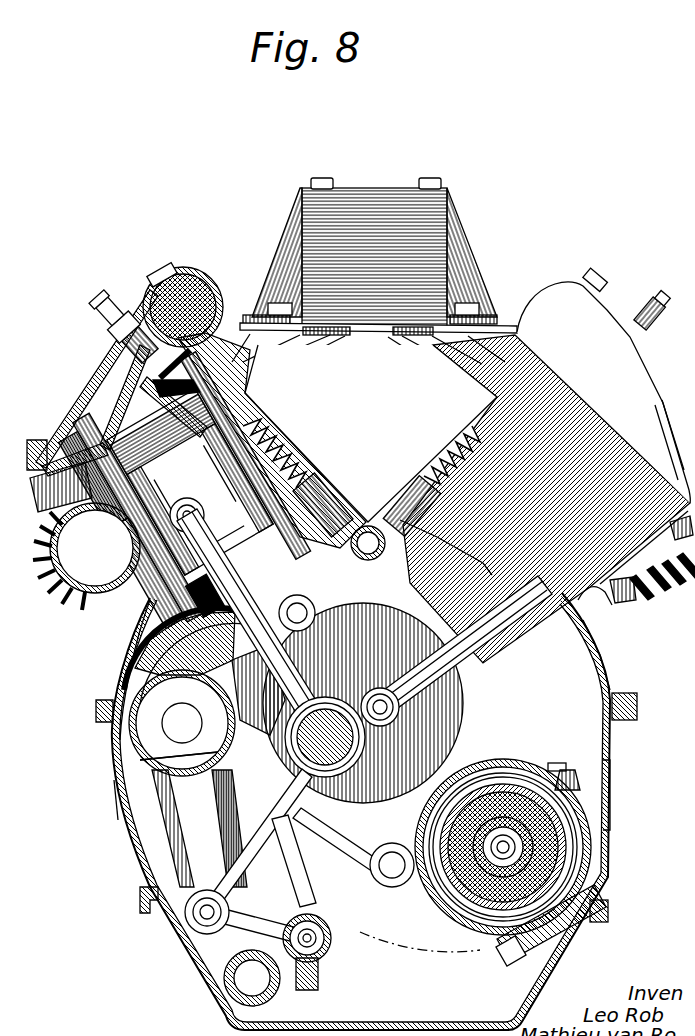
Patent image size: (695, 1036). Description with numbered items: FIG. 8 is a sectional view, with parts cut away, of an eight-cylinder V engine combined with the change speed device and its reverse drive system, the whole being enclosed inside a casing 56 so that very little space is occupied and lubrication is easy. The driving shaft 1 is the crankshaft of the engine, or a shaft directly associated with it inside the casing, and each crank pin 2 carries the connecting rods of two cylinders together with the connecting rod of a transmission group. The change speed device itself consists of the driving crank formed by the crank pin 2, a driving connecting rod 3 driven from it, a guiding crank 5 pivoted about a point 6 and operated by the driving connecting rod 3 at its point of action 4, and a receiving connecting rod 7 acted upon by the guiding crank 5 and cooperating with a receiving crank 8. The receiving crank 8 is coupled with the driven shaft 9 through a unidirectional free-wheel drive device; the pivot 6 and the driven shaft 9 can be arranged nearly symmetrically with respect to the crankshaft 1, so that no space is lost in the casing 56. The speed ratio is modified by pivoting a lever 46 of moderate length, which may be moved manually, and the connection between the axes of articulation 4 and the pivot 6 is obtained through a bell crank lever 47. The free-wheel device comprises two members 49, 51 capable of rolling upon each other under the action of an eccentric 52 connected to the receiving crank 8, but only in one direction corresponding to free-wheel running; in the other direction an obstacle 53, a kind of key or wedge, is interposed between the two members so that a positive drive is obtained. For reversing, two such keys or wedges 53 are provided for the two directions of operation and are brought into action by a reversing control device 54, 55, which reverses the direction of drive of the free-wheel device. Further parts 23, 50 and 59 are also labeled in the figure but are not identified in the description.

The driving shaft 1 is at (350, 690).
The crank pin 2 is at (392, 746).
The driving connecting rod 3 is at (240, 845).
The point of action of the guiding crank 4 is at (270, 818).
The guiding crank 5 is at (285, 868).
The pivot point 6 is at (313, 960).
The receiving connecting rod 7 is at (345, 843).
The receiving crank 8 is at (400, 908).
The driven shaft 9 is at (492, 908).
The dash-dot reference line 23 is at (392, 888).
The lever 46 is at (116, 795).
The bell crank lever 47 is at (300, 920).
The rolling member of free wheel device 49 is at (552, 922).
The shaft 50 is at (140, 762).
The rolling member of free wheel device 51 is at (575, 936).
The eccentric 52 is at (455, 912).
The key or wedge 53 is at (540, 773).
The reversing control device 54 is at (574, 648).
The reversing control device 55 is at (567, 782).
The casing 56 is at (612, 792).
The crankcase left wall 59 is at (160, 630).